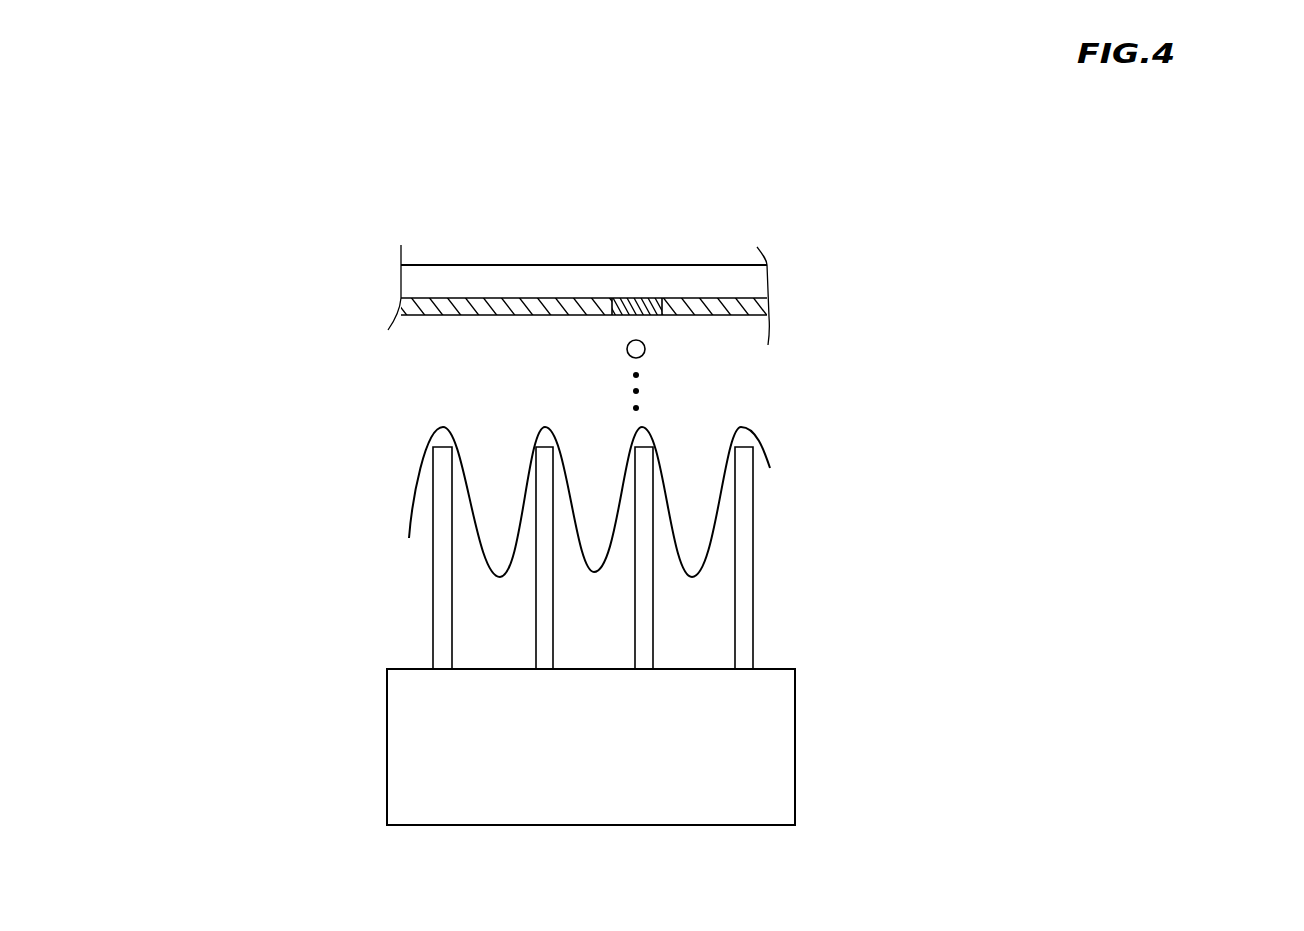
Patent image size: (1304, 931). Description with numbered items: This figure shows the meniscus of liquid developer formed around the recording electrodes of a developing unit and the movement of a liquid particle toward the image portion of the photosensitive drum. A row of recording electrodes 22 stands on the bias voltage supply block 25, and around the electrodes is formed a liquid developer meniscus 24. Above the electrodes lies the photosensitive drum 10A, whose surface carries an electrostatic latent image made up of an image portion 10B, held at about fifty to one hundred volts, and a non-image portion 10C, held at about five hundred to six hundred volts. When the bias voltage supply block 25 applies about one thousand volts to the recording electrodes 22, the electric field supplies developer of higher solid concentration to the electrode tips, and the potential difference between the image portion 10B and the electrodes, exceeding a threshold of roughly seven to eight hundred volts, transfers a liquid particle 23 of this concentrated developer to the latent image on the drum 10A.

The photosensitive drum 10A is at (598, 279).
The image portion 10B is at (643, 300).
The non-image portion 10C is at (768, 345).
The recording electrodes 22 is at (745, 566).
The liquid particle 23 is at (645, 353).
The liquid developer meniscus 24 is at (406, 459).
The bias voltage supply block 25 is at (782, 760).